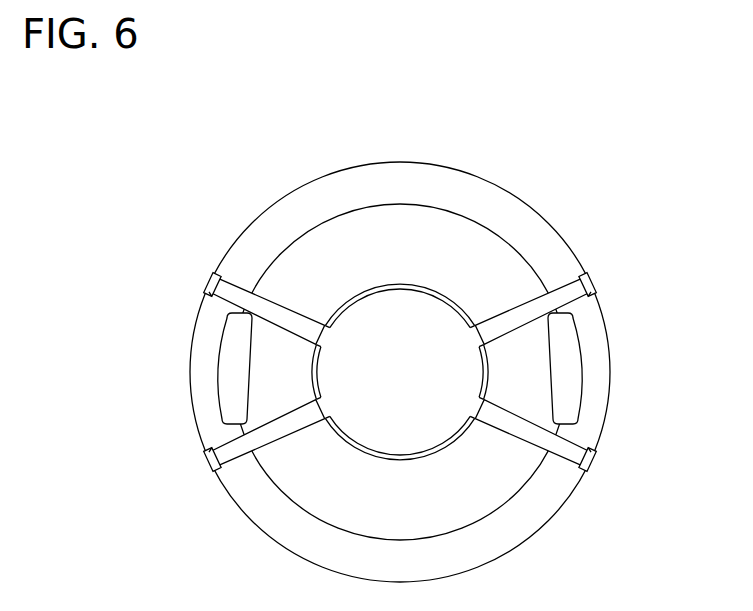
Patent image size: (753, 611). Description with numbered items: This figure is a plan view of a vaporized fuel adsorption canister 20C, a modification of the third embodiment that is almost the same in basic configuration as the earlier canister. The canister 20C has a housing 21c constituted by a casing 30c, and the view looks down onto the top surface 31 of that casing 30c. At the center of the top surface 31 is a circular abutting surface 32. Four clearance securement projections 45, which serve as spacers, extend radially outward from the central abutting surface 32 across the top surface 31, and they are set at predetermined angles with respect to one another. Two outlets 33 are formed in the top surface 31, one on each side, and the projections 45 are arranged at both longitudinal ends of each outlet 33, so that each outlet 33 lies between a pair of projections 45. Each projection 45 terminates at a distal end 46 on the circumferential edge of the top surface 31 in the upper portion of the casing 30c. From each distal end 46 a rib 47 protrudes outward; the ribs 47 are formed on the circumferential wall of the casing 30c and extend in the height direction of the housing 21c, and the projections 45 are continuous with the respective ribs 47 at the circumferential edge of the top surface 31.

The vaporized fuel adsorption canister 20C is at (437, 132).
The housing 21c is at (503, 181).
The casing 30c is at (258, 220).
The top surface 31 is at (500, 262).
The circular abutting surface 32 is at (398, 430).
The outlet 33 is at (220, 366).
The clearance securement projection 45 is at (530, 310).
The distal end 46 is at (208, 292).
The rib 47 is at (205, 276).